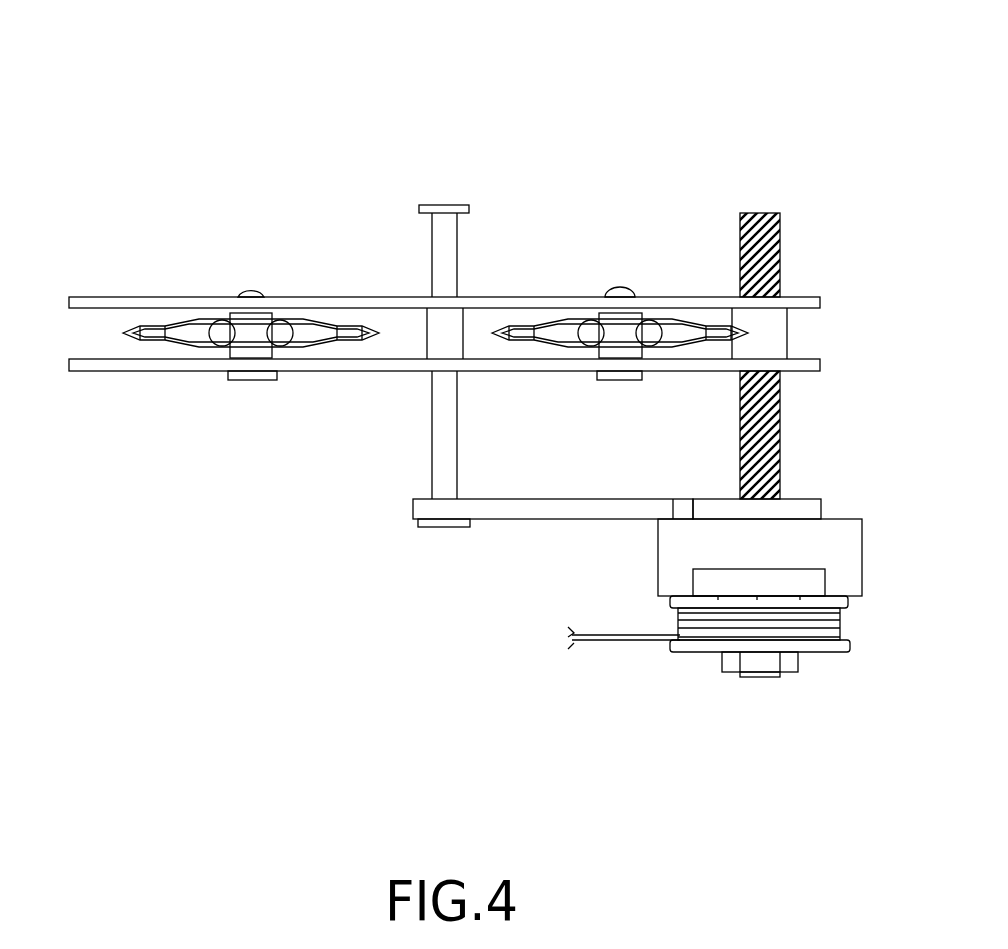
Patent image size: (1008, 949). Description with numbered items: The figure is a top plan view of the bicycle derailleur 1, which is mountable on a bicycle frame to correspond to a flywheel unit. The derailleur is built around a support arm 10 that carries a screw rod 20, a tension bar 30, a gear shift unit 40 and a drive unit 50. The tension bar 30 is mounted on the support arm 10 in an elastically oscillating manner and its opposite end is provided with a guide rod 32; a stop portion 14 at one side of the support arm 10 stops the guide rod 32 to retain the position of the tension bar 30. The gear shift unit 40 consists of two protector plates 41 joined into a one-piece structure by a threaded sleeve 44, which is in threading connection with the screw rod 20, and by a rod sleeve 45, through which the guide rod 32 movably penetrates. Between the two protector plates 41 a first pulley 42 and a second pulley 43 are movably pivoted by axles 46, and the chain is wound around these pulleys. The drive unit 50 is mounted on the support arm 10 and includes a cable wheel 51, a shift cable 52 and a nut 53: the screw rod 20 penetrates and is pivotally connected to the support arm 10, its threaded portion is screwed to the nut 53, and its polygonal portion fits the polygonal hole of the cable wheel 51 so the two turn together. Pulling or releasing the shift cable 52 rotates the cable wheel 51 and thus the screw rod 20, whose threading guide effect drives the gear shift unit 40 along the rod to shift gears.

The bicycle derailleur 1 is at (422, 124).
The support arm 10 is at (802, 578).
The stop portion 14 is at (690, 508).
The screw rod 20 is at (778, 423).
The tension bar 30 is at (552, 509).
The guide rod 32 is at (448, 430).
The gear shift unit 40 is at (170, 234).
The protector plates 41 is at (73, 302).
The first pulley 42 is at (622, 333).
The second pulley 43 is at (255, 333).
The threaded sleeve 44 is at (777, 335).
The rod sleeve 45 is at (447, 335).
The axles 46 is at (257, 378).
The drive unit 50 is at (798, 765).
The cable wheel 51 is at (692, 647).
The shift cable 52 is at (608, 637).
The nut 53 is at (760, 662).